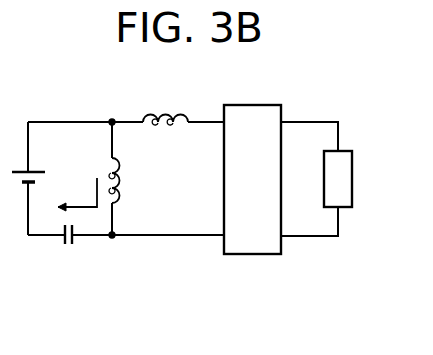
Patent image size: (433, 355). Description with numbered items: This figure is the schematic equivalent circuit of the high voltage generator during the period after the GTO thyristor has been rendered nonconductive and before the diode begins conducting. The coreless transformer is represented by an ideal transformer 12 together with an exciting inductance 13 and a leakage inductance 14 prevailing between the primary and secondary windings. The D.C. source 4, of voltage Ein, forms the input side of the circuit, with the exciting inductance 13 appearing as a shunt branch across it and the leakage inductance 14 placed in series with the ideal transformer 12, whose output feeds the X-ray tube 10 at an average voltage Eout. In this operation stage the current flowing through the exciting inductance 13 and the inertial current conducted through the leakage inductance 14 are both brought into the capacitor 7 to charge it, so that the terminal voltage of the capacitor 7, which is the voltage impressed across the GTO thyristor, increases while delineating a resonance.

The D.C. source 4 is at (45, 172).
The capacitor 7 is at (74, 237).
The X-ray tube 10 is at (352, 179).
The ideal transformer 12 is at (224, 163).
The exciting inductance 13 is at (120, 184).
The leakage inductance 14 is at (166, 114).